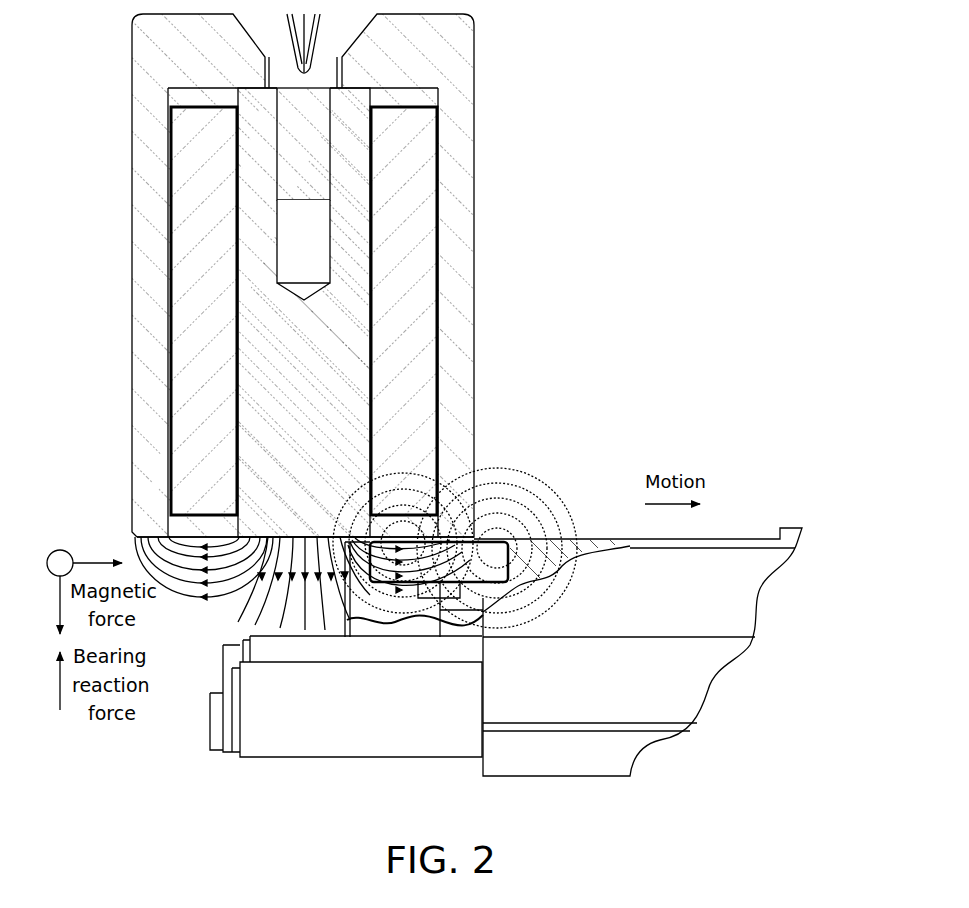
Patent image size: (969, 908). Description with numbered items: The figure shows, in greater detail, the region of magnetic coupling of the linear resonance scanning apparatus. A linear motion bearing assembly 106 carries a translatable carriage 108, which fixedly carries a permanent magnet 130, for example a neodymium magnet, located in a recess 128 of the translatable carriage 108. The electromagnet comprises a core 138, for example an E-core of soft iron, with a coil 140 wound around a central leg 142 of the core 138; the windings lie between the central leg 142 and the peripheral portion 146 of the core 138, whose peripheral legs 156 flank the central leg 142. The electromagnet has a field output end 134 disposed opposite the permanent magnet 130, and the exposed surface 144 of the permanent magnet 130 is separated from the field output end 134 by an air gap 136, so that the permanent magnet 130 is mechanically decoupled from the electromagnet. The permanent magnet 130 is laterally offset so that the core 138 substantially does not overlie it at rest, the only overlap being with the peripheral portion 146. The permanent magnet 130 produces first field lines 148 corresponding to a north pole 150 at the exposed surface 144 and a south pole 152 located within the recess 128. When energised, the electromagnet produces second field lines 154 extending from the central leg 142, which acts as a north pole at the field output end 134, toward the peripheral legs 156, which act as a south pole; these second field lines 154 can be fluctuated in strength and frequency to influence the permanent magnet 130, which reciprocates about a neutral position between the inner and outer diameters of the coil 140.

The linear motion bearing assembly 106 is at (413, 743).
The translatable carriage 108 is at (760, 603).
The recess 128 is at (516, 556).
The permanent magnet 130 is at (493, 572).
The field output end 134 is at (208, 617).
The air gap 136 is at (482, 530).
The core 138 is at (475, 52).
The coil 140 is at (417, 256).
The central leg 142 is at (280, 437).
The exposed surface 144 is at (502, 536).
The peripheral portion 146 is at (478, 405).
The first field lines 148 is at (545, 612).
The north pole 150 is at (483, 500).
The south pole 152 is at (332, 620).
The second field lines 154 is at (458, 632).
The peripheral legs 156 is at (150, 374).